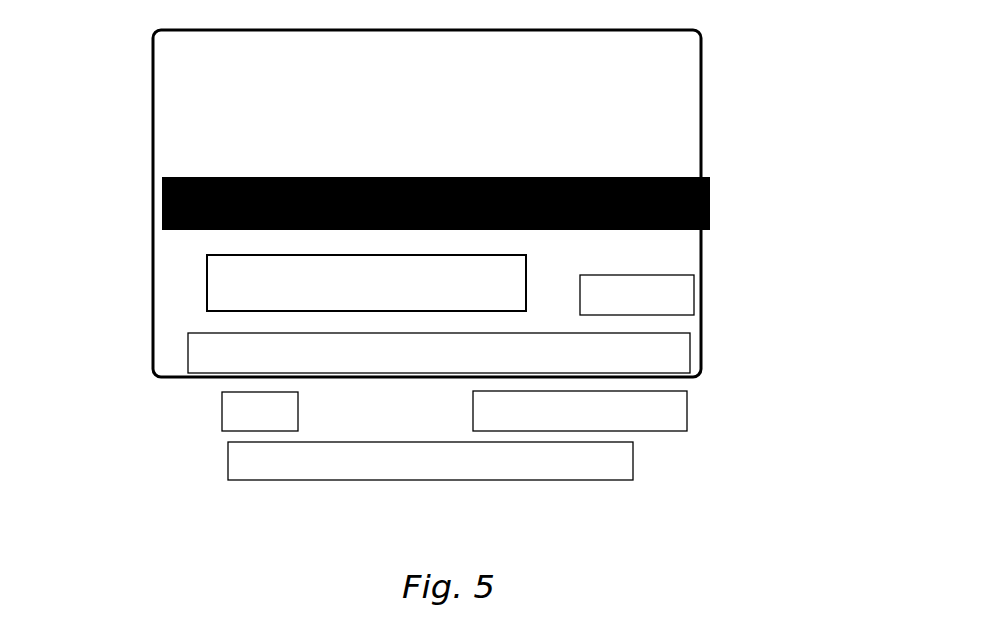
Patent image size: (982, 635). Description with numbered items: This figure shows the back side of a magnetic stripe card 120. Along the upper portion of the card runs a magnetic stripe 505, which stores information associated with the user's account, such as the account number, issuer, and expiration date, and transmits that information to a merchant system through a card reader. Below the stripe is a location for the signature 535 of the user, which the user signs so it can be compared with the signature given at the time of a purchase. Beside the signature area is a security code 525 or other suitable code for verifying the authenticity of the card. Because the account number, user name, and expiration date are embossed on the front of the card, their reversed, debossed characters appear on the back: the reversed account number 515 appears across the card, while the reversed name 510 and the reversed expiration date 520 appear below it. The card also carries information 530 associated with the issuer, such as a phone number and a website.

The magnetic stripe card 120 is at (207, 106).
The magnetic stripe 505 is at (130, 172).
The signature 535 is at (180, 298).
The security code 525 is at (700, 270).
The account number 515 is at (690, 335).
The reversed expiration date 520 is at (195, 390).
The reversed name 510 is at (705, 437).
The information 530 is at (200, 478).